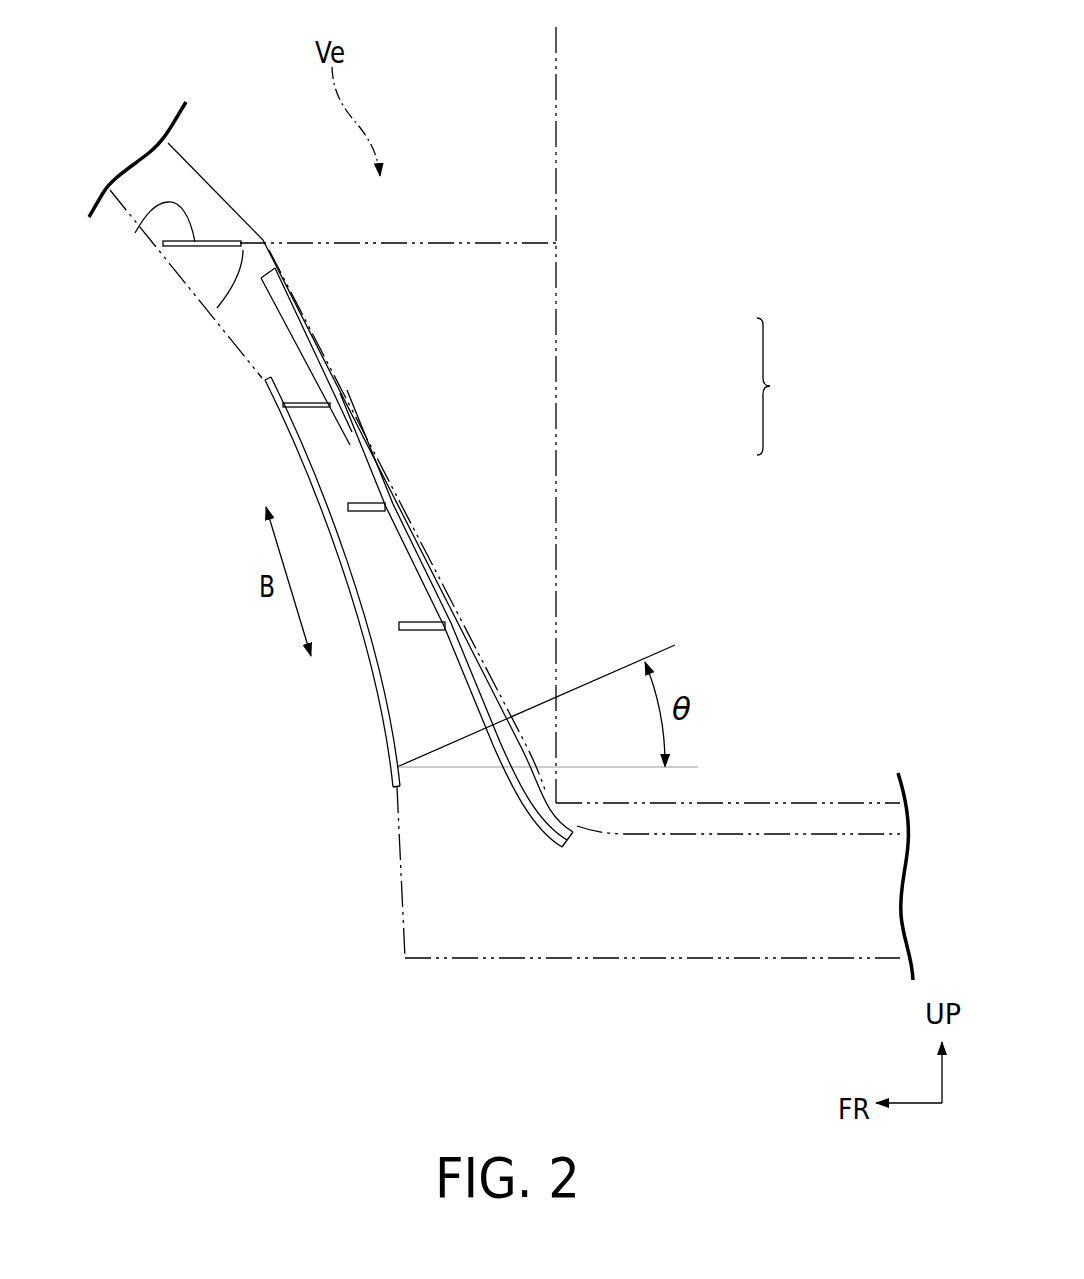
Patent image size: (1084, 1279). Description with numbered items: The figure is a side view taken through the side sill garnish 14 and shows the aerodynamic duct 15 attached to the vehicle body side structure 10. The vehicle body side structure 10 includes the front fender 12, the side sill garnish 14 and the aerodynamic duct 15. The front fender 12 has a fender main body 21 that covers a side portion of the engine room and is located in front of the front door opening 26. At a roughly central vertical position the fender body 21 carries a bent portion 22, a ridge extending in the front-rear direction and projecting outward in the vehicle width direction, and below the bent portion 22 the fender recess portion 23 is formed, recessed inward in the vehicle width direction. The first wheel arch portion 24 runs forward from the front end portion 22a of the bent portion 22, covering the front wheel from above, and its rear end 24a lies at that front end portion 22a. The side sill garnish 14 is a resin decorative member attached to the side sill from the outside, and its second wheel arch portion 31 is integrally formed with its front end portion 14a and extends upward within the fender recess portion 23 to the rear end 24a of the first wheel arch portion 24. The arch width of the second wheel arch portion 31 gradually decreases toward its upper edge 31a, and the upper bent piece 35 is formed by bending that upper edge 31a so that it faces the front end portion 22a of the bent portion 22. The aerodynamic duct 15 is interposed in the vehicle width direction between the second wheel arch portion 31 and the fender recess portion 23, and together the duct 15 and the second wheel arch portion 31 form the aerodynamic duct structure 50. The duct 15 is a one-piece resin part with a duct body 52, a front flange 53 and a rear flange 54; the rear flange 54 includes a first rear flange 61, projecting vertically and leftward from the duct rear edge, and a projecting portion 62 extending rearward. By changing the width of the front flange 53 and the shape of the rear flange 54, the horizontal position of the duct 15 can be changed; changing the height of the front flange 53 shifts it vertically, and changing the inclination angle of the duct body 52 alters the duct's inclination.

The vehicle body side structure 10 is at (468, 216).
The front fender 12 is at (558, 97).
The side sill garnish 14 is at (829, 800).
The front end portion 14a is at (625, 893).
The aerodynamic duct 15 is at (391, 469).
The fender main body 21 is at (543, 149).
The bent portion 22 is at (492, 243).
The front end portion 22a is at (217, 308).
The fender recess portion 23 is at (520, 295).
The first wheel arch portion 24 is at (222, 181).
The rear end 24a is at (173, 295).
The front door opening 26 is at (558, 408).
The second wheel arch portion 31 is at (455, 580).
The upper edge 31a is at (135, 233).
The upper bent piece 35 is at (144, 263).
The aerodynamic duct structure 50 is at (781, 386).
The duct body 52 is at (420, 695).
The front flange 53 is at (312, 449).
The rear flange 54 is at (313, 335).
The first rear flange 61 is at (412, 549).
The projecting portion 62 is at (340, 394).